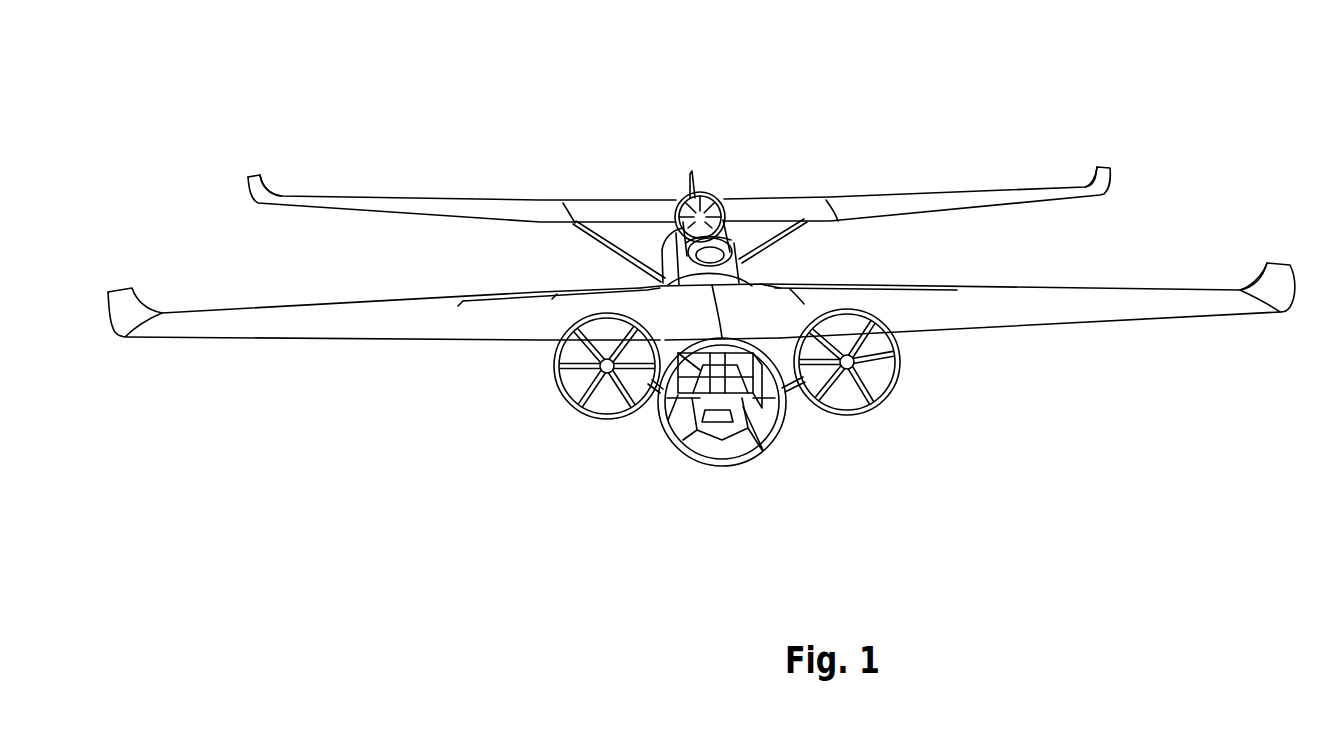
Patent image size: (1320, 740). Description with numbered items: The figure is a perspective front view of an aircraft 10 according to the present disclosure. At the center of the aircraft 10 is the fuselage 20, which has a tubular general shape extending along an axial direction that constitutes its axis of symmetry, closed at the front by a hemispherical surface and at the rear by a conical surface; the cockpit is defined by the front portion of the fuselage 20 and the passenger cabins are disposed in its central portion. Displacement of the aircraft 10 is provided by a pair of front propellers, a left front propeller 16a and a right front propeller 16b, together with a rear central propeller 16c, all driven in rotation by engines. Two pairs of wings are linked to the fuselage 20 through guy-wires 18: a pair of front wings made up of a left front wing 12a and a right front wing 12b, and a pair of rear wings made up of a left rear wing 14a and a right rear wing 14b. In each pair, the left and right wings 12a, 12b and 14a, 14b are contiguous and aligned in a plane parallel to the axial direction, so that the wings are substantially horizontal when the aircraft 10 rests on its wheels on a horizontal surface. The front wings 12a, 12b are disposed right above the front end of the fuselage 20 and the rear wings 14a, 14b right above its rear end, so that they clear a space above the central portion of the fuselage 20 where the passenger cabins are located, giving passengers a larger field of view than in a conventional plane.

The aircraft 10 is at (783, 132).
The left front wing 12a is at (462, 345).
The right front wing 12b is at (1035, 336).
The left rear wing 14a is at (504, 195).
The right rear wing 14b is at (934, 188).
The left front propeller 16a is at (603, 425).
The right front propeller 16b is at (896, 399).
The rear central propeller 16c is at (709, 192).
The guy-wires 18 is at (775, 252).
The fuselage 20 is at (774, 456).